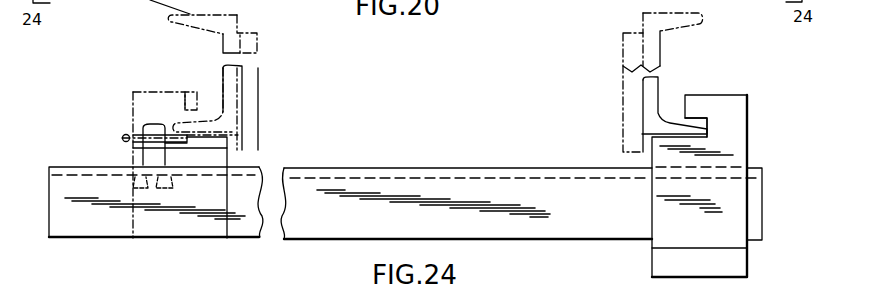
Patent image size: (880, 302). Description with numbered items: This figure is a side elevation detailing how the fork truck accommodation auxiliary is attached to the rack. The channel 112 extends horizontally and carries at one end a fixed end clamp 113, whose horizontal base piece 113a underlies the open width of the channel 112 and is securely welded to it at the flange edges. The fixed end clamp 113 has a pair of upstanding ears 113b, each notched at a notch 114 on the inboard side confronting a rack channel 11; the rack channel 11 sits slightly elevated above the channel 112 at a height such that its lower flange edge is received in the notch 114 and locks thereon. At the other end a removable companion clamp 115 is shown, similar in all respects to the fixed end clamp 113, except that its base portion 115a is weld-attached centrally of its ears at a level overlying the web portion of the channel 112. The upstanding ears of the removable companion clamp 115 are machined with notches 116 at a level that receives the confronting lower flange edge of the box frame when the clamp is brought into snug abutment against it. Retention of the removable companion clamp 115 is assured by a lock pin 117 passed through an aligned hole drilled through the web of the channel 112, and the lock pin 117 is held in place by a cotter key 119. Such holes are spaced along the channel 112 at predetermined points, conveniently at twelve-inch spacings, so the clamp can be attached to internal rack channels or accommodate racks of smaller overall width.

The rack channel 11 is at (660, 87).
The channel 112 is at (426, 167).
The fixed end clamp 113 is at (752, 262).
The horizontal base piece 113a is at (713, 269).
The upstanding ears 113b is at (723, 153).
The notch 114 is at (693, 118).
The removable companion clamp 115 is at (157, 80).
The base portion 115a is at (213, 159).
The notch 116 is at (185, 87).
The lock pin 117 is at (137, 127).
The cotter key 119 is at (121, 140).